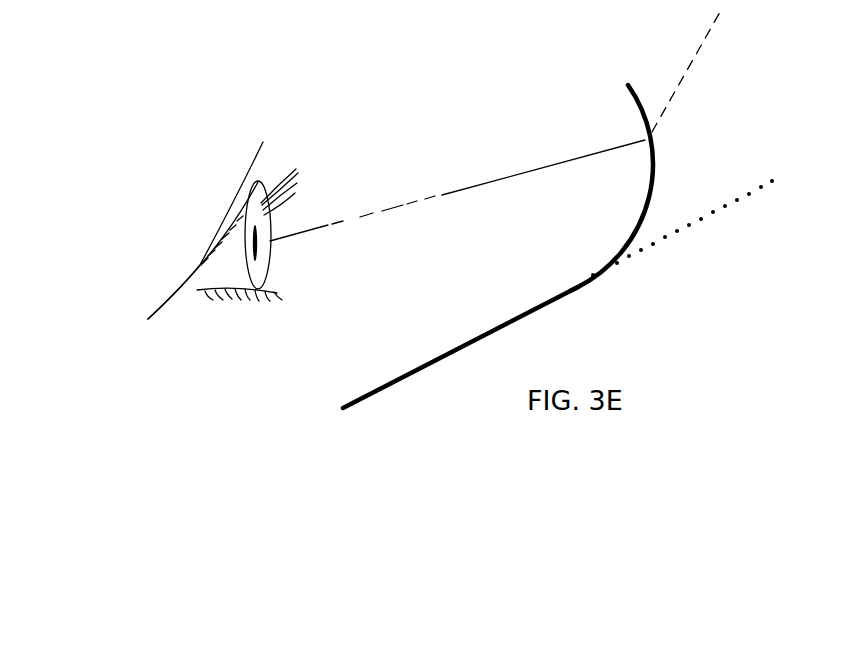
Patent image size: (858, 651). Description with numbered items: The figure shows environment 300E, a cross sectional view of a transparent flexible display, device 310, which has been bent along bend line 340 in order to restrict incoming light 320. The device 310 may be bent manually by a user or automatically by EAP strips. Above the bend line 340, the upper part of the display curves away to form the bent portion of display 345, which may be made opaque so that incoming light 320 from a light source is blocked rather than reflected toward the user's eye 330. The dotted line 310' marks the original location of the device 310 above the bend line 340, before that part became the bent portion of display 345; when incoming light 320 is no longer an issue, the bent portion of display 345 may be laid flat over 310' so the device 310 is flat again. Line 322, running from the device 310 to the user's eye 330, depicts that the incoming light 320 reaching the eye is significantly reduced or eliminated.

The environment 300E is at (437, 123).
The device 310 is at (498, 246).
The original location of device 310' is at (695, 228).
The incoming light 320 is at (708, 35).
The line 322 is at (392, 209).
The user's eye 330 is at (197, 228).
The bend line 340 is at (579, 285).
The bent portion of display 345 is at (619, 190).